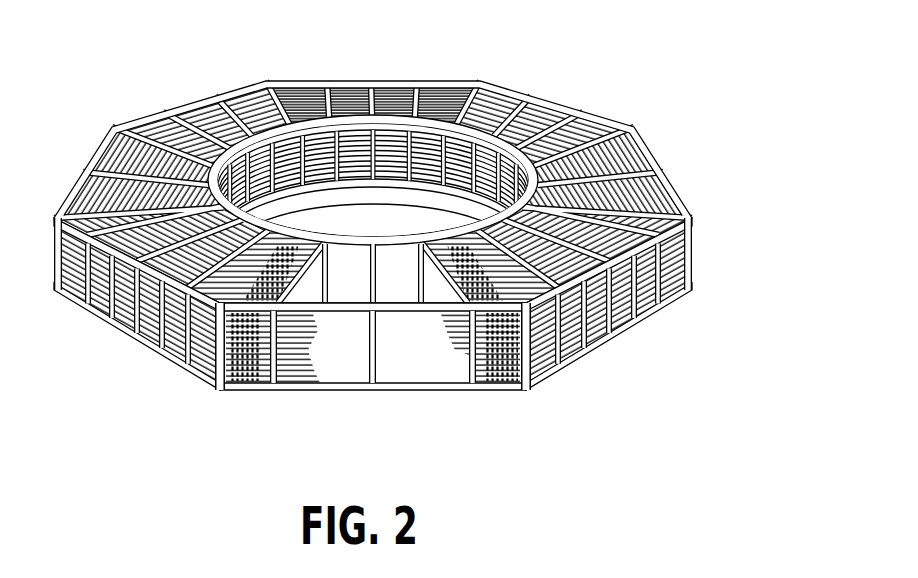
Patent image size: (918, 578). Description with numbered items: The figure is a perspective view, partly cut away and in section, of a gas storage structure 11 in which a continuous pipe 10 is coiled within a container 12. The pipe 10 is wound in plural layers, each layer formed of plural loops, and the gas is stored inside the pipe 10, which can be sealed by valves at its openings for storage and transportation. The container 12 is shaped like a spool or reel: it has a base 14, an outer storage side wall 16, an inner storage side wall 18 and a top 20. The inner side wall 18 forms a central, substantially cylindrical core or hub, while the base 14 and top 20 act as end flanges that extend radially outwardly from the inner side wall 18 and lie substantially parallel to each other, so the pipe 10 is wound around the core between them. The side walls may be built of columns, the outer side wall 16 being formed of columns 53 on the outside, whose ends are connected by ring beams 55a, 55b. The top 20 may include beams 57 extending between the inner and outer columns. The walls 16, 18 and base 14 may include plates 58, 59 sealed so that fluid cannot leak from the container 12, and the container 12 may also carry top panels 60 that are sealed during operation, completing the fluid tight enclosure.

The continuous pipe 10 is at (540, 366).
The gas storage structure 11 is at (647, 90).
The container 12 is at (652, 317).
The base 14 is at (413, 350).
The outer storage side wall 16 is at (228, 388).
The inner storage side wall 18 is at (313, 392).
The top 20 is at (505, 110).
The columns 53 is at (290, 368).
The ring beam 55a is at (258, 335).
The ring beam 55b is at (402, 393).
The beams 57 is at (343, 282).
The plates 58 is at (538, 352).
The plates 59 is at (167, 322).
The top panels 60 is at (624, 190).